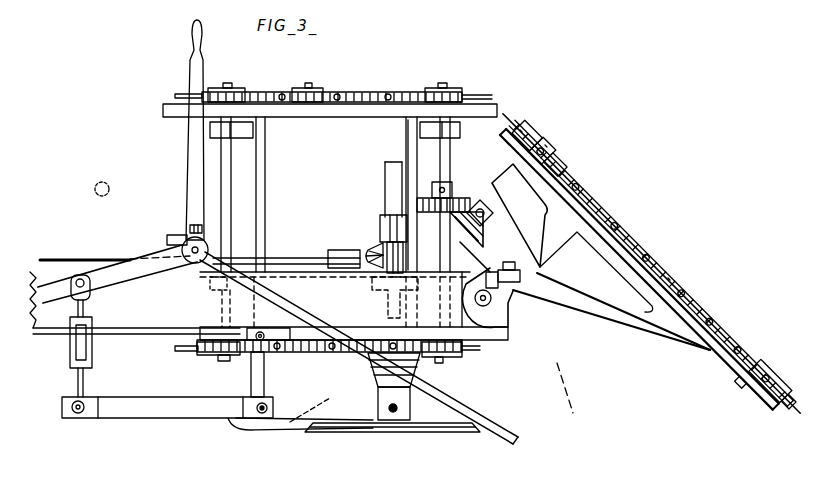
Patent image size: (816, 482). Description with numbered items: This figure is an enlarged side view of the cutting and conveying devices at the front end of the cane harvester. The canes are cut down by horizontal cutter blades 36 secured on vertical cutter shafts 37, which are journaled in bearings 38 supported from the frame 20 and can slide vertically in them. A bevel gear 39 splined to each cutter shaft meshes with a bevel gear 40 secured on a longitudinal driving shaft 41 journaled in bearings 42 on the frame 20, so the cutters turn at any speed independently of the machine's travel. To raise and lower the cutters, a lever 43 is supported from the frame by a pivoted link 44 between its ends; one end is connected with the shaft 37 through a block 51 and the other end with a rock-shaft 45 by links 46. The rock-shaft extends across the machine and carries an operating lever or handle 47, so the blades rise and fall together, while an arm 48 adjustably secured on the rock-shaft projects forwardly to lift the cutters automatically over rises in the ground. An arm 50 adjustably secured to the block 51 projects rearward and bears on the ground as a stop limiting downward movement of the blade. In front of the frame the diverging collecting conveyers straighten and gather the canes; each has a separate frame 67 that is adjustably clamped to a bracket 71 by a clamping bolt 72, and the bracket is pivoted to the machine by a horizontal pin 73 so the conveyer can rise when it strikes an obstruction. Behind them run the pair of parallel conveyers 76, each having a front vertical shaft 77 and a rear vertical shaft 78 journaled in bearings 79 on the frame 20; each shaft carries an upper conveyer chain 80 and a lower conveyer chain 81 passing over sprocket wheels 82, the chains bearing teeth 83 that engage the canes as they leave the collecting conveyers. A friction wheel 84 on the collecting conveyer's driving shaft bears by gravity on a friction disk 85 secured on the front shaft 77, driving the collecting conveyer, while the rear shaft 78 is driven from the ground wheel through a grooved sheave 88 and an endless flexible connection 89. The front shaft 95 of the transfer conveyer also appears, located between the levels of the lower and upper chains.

The frame 20 is at (493, 323).
The horizontal cutter blades 36 is at (332, 432).
The vertical cutter shafts 37 is at (382, 161).
The bearings 38 is at (383, 218).
The bevel gears 39 is at (412, 262).
The bevel gears 40 is at (372, 248).
The longitudinal driving shafts 41 is at (65, 262).
The bearings 42 is at (328, 252).
The levers 43 is at (155, 408).
The pivoted links 44 is at (258, 372).
The rock-shaft 45 is at (185, 241).
The links 46 is at (84, 386).
The operating lever or handle 47 is at (191, 30).
The arm 48 is at (490, 423).
The arm 50 is at (250, 431).
The block 51 is at (425, 432).
The conveyer frame 67 is at (573, 297).
The bracket 71 is at (493, 300).
The clamping bolt 72 is at (541, 267).
The horizontal pin 73 is at (507, 308).
The conveyers 76 is at (294, 128).
The front vertical shaft 77 is at (443, 83).
The rear vertical shaft 78 is at (226, 87).
The bearings 79 is at (210, 130).
The upper conveyer chain 80 is at (353, 92).
The lower conveyer chain 81 is at (303, 352).
The sprocket wheels 82 is at (235, 90).
The teeth 83 is at (190, 93).
The friction wheel 84 is at (489, 229).
The friction disk 85 is at (443, 200).
The grooved sheave 88 is at (210, 328).
The endless flexible connection 89 is at (57, 340).
The front shaft 95 is at (96, 184).